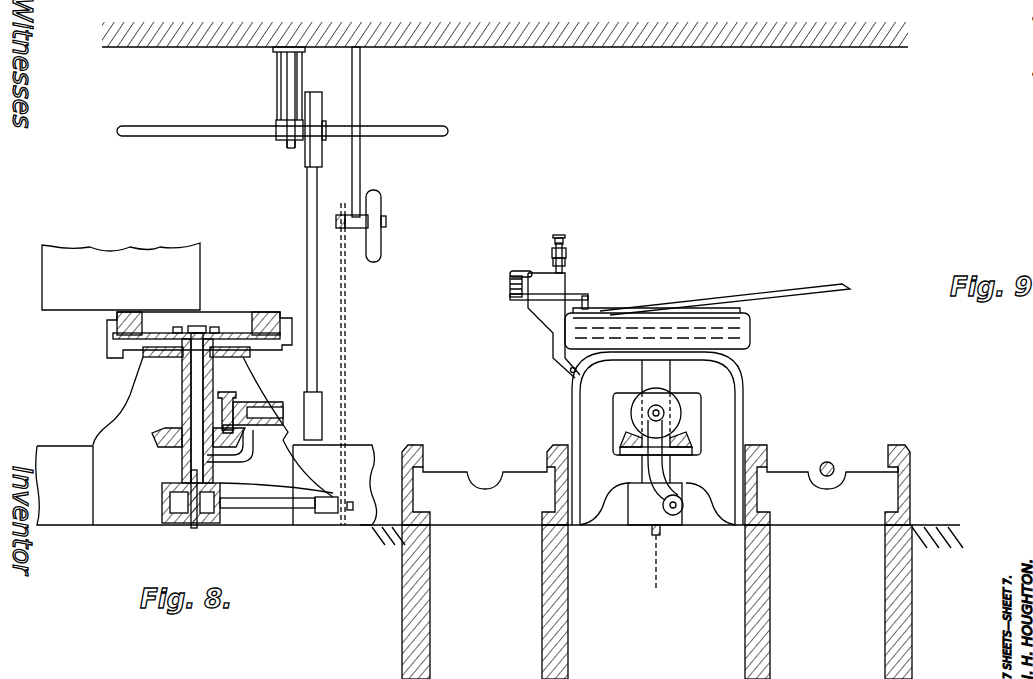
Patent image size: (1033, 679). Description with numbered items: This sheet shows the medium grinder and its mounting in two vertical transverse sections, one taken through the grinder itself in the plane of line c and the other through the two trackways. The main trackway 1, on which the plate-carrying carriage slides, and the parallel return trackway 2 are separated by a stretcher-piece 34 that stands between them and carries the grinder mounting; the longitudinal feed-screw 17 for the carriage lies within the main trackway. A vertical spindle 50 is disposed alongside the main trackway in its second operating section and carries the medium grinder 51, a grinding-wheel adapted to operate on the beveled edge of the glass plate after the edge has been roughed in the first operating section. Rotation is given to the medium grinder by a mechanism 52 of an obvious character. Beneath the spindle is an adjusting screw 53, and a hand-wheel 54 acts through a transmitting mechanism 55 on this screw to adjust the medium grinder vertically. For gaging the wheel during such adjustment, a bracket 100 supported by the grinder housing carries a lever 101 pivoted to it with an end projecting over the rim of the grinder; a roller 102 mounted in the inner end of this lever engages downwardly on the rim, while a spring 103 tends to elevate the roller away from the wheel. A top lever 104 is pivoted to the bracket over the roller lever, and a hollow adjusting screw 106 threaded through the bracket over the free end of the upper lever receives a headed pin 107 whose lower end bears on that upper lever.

In FIG. 9, the main trackway 1 is at (912, 457).
In FIG. 9, the return trackway 2 is at (430, 450).
In FIG. 9, the longitudinal feed-screw 17 is at (834, 466).
In FIG. 8, the stretcher-piece 34 is at (118, 532).
In FIG. 9, the stretcher-piece 34 is at (745, 472).
In FIG. 8, the vertical spindle 50 is at (190, 374).
In FIG. 8, the medium grinder 51 is at (108, 324).
In FIG. 9, the medium grinder 51 is at (700, 308).
In FIG. 8, the rotation mechanism 52 is at (158, 432).
In FIG. 9, the rotation mechanism 52 is at (700, 437).
In FIG. 8, the adjusting screw 53 is at (190, 528).
In FIG. 9, the adjusting screw 53 is at (661, 530).
In FIG. 8, the hand-wheel 54 is at (374, 210).
In FIG. 8, the transmitting mechanism 55 is at (310, 512).
In FIG. 9, the transmitting mechanism 55 is at (665, 510).
In FIG. 9, the bracket 100 is at (545, 320).
In FIG. 9, the roller lever 101 is at (577, 296).
In FIG. 9, the roller 102 is at (590, 308).
In FIG. 9, the spring 103 is at (508, 289).
In FIG. 9, the top lever 104 is at (528, 271).
In FIG. 9, the hollow adjusting screw 106 is at (567, 254).
In FIG. 9, the headed pin 107 is at (562, 240).
In FIG. 9, the line c is at (653, 571).